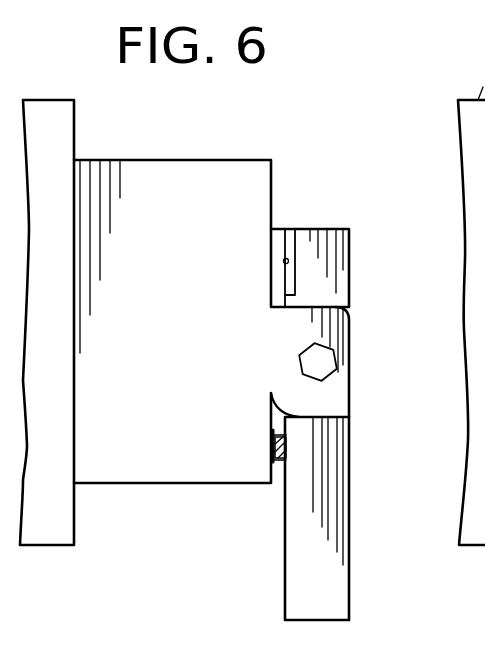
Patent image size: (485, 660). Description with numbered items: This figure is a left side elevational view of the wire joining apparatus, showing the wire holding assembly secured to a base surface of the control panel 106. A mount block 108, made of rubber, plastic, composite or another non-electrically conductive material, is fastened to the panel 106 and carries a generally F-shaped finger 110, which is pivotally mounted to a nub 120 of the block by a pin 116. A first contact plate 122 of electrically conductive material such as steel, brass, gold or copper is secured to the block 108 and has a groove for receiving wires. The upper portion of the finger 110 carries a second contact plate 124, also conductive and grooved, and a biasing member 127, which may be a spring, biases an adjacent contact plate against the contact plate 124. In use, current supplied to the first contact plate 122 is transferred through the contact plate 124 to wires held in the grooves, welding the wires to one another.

The control panel 106 is at (48, 98).
The mount block 108 is at (163, 162).
The finger 110 is at (350, 590).
The pin 116 is at (327, 362).
The nub 120 is at (335, 397).
The first contact plate 122 is at (281, 229).
The second contact plate 124 is at (297, 247).
The biasing member 127 is at (270, 445).